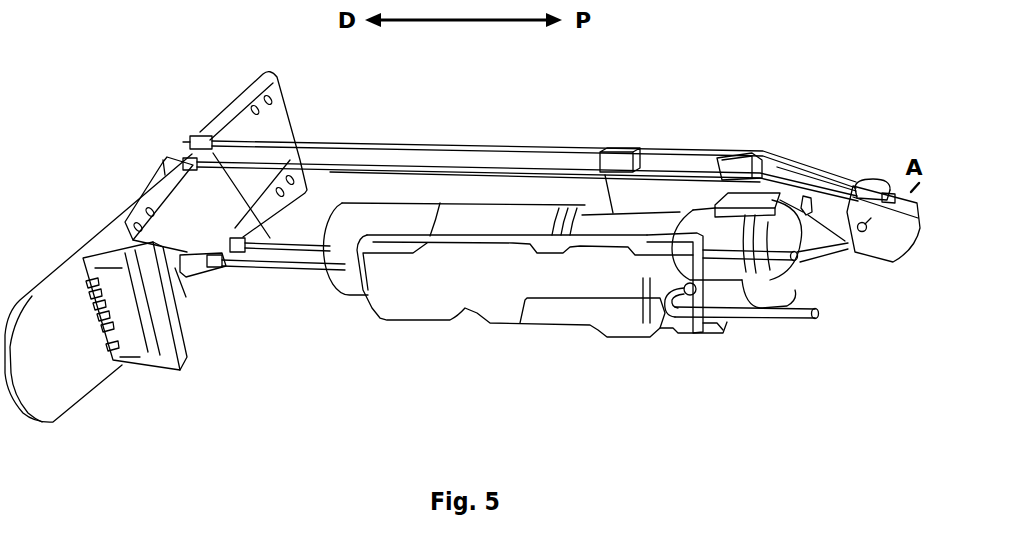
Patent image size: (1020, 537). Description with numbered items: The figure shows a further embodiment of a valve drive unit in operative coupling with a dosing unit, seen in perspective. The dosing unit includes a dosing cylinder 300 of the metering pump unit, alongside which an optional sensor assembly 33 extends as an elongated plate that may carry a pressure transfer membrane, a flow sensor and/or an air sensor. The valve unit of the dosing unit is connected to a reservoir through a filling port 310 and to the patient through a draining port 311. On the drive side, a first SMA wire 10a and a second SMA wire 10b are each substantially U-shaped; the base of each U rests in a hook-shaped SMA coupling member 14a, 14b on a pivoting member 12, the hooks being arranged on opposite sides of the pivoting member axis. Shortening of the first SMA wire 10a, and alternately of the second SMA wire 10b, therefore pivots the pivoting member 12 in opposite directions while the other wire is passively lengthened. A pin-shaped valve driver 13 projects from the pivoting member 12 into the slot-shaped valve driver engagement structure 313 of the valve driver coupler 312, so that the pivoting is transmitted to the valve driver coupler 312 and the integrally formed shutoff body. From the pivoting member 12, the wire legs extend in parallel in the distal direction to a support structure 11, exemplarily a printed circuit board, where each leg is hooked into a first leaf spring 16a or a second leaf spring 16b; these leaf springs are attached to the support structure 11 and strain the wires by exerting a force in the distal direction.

The first SMA wire 10a is at (503, 145).
The second SMA wire 10b is at (293, 270).
The support structure 11 is at (77, 390).
The pivoting member 12 is at (893, 260).
The valve driver 13 is at (808, 210).
The SMA coupling member 14a is at (875, 172).
The SMA coupling member 14b is at (864, 256).
The first leaf spring 16a is at (242, 122).
The second leaf spring 16b is at (200, 277).
The sensor assembly 33 is at (493, 273).
The dosing cylinder 300 is at (473, 223).
The filling port 310 is at (795, 317).
The draining port 311 is at (765, 253).
The valve driver coupler 312 is at (742, 200).
The valve driver engagement structure 313 is at (808, 200).